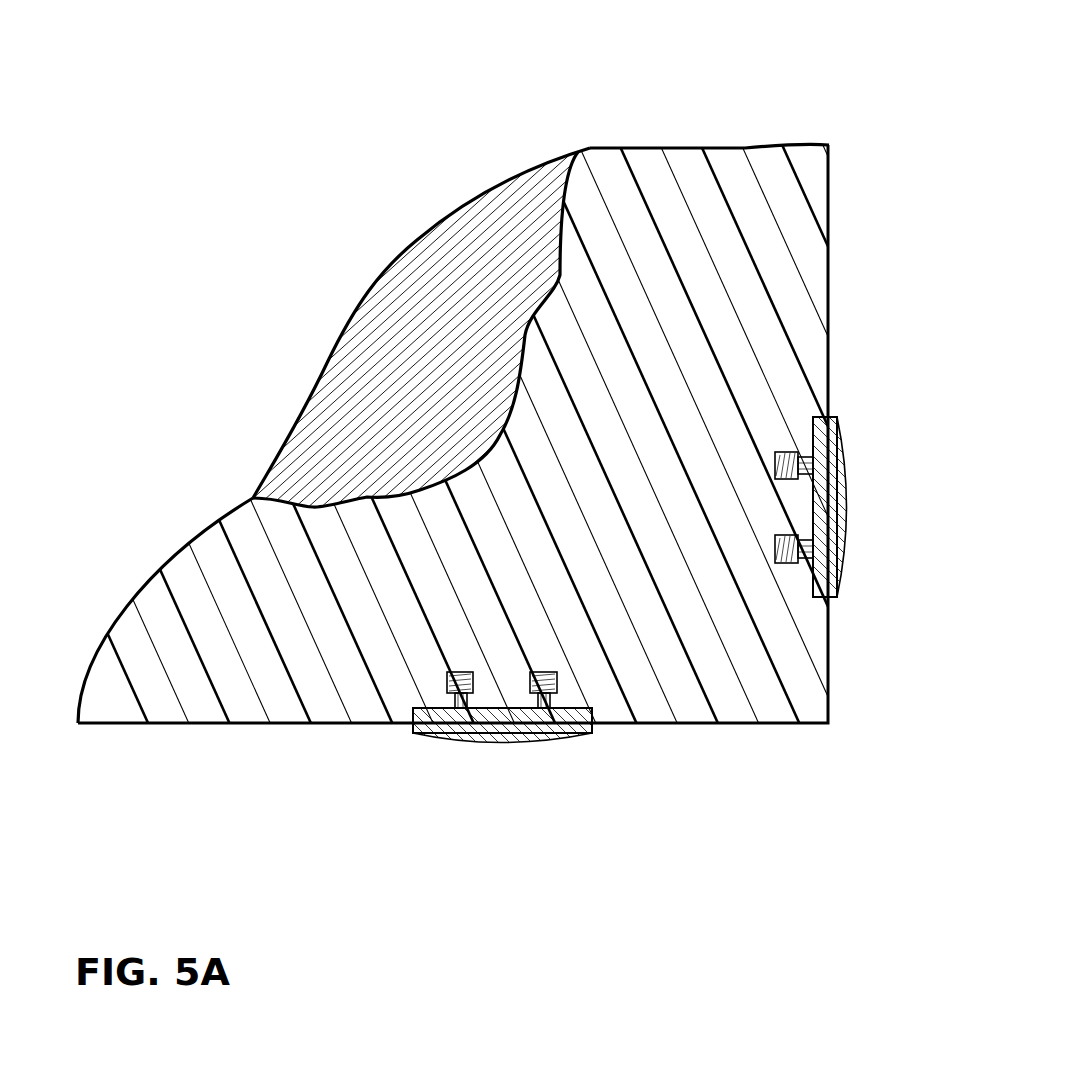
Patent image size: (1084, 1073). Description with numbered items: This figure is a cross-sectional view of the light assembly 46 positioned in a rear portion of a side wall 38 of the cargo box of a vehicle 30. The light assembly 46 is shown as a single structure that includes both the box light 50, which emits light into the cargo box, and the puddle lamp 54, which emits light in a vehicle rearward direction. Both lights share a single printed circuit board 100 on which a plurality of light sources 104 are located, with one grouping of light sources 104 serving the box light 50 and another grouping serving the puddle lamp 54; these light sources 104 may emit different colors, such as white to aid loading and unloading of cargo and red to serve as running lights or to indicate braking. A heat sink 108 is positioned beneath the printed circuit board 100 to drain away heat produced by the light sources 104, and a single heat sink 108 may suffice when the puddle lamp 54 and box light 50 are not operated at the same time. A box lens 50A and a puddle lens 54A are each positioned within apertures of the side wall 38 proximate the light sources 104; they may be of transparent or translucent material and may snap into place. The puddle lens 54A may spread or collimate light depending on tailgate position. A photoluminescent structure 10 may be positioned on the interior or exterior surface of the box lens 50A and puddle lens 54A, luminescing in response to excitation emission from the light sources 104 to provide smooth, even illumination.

The photoluminescent structure 10 is at (861, 510).
The vehicle 30 is at (542, 371).
The side wall 38 is at (675, 145).
The light assembly 46 is at (514, 312).
The box light 50 is at (853, 556).
The box lens 50A is at (822, 547).
The puddle lamp 54 is at (465, 742).
The puddle lens 54A is at (502, 760).
The printed circuit board 100 is at (324, 623).
The light sources 104 is at (775, 548).
The heat sink 108 is at (424, 359).